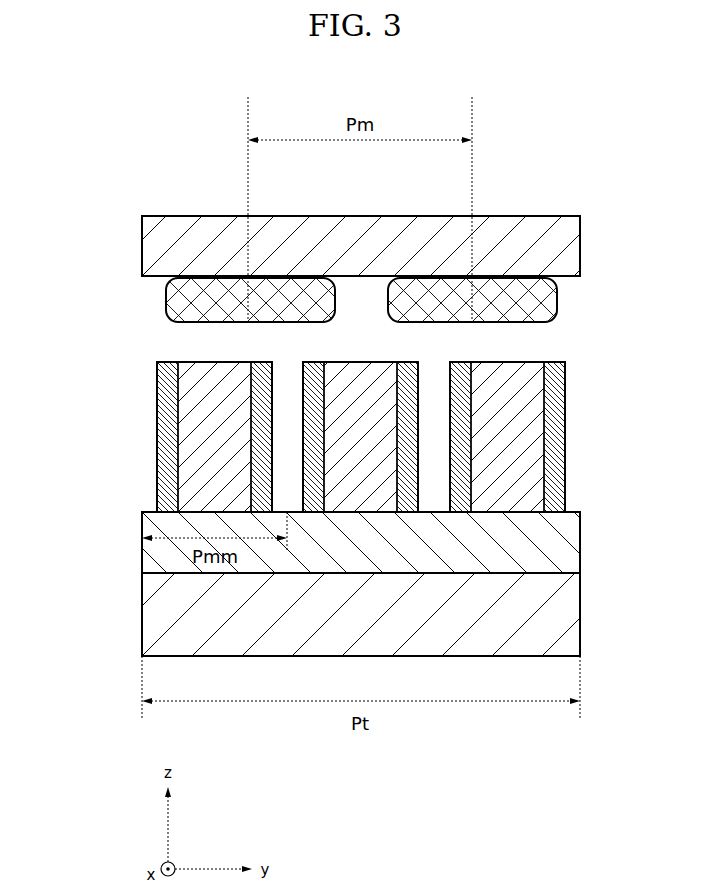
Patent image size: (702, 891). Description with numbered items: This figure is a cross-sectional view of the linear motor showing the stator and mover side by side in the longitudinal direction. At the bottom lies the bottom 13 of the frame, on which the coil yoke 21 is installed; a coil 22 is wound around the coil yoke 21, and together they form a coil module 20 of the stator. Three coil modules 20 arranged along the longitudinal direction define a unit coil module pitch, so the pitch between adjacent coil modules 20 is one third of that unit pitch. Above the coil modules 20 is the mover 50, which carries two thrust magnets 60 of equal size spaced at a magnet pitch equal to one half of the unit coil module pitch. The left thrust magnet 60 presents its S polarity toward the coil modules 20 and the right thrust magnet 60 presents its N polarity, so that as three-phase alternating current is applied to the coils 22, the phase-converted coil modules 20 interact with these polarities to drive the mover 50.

The mover 50 is at (522, 212).
The thrust magnets 60 is at (165, 295).
The coil modules 20 is at (306, 467).
The coil 22 is at (148, 480).
The coil yoke 21 is at (157, 522).
The bottom 13 is at (166, 603).